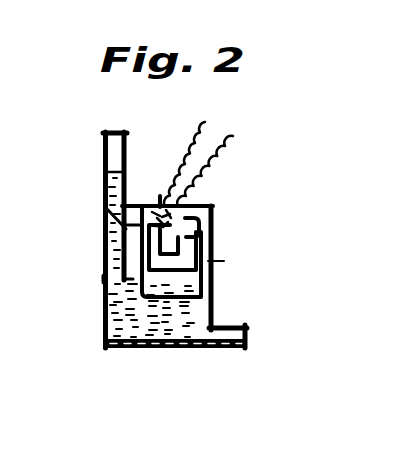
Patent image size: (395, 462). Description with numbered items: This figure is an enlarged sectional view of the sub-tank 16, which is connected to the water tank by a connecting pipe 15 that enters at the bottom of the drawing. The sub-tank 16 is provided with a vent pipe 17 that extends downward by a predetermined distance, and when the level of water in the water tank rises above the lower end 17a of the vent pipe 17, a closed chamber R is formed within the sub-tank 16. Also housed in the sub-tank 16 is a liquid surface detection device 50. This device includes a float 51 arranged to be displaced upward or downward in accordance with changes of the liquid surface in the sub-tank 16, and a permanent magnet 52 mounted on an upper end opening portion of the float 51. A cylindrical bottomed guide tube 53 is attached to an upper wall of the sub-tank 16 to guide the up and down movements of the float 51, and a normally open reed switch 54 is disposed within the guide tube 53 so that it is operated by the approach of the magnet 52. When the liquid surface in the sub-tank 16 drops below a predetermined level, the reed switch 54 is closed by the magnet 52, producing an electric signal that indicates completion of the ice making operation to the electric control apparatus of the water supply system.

The connecting pipe 15 is at (213, 349).
The sub-tank 16 is at (103, 330).
The vent pipe 17 is at (102, 154).
The lower end of vent pipe 17a is at (132, 278).
The liquid surface detection device 50 is at (106, 208).
The float 51 is at (186, 291).
The permanent magnet 52 is at (159, 206).
The cylindrical bottomed guide tube 53 is at (178, 238).
The reed switch 54 is at (193, 206).
The closed chamber R is at (225, 266).